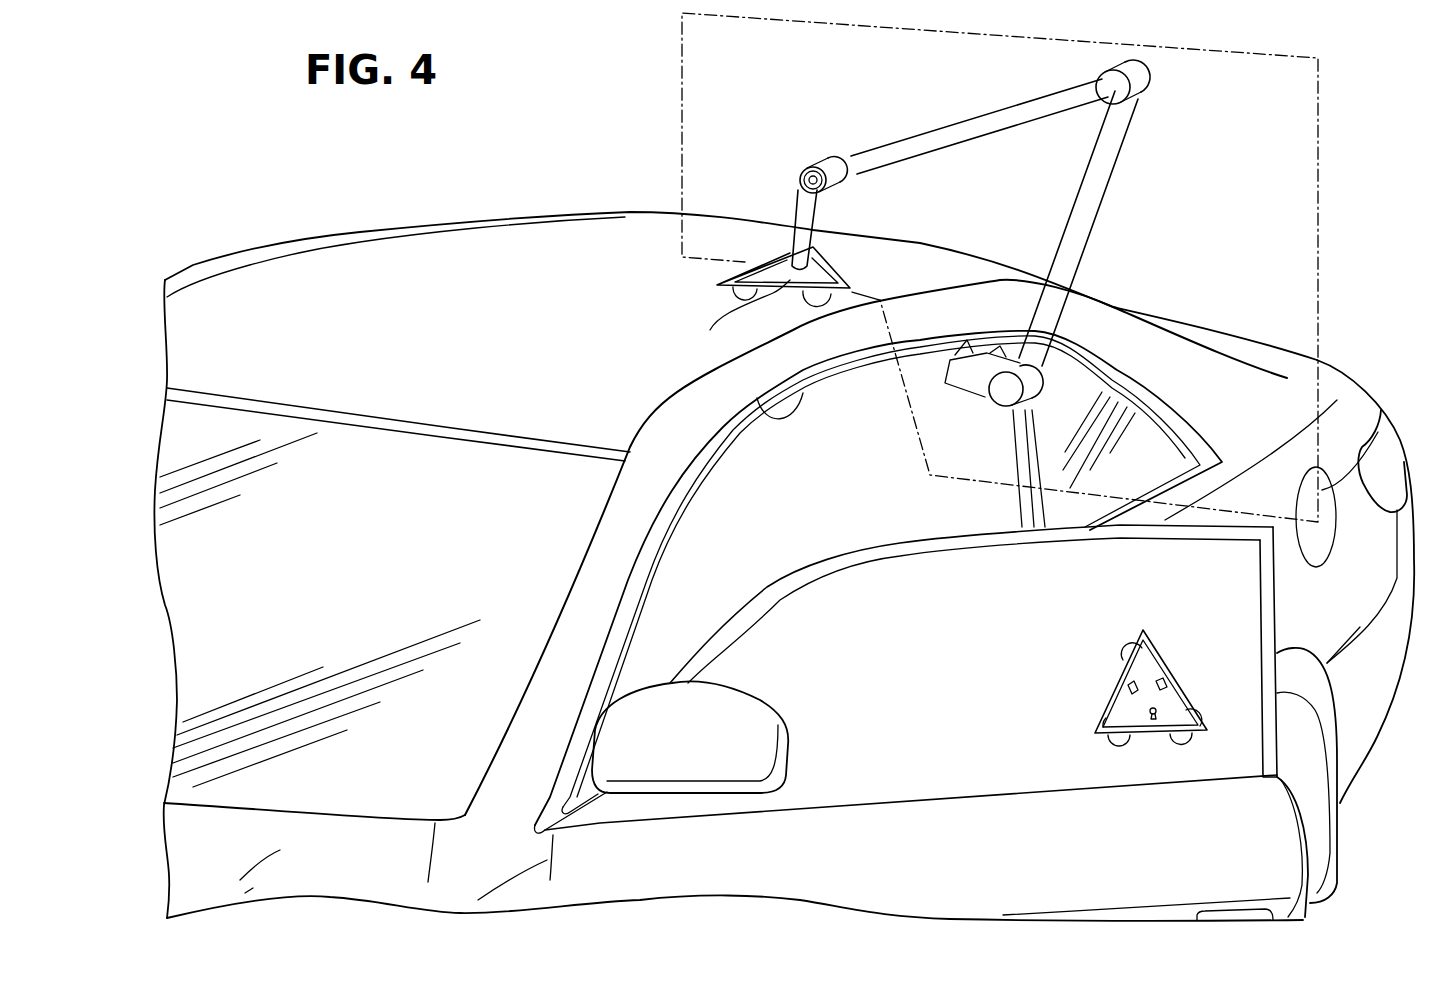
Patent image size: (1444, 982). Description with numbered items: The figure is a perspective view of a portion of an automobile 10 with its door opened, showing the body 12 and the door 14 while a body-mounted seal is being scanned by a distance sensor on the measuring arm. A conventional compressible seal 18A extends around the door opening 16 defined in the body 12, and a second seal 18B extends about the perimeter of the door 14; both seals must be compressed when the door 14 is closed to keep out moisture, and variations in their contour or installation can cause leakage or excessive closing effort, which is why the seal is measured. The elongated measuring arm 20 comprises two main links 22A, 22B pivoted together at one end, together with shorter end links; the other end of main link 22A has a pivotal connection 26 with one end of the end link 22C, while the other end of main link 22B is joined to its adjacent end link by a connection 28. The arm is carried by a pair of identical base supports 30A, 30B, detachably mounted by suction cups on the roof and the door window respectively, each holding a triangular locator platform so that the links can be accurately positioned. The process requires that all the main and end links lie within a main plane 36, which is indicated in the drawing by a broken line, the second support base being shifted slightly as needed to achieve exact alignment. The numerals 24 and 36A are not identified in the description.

The automobile 10 is at (430, 193).
The body 12 is at (487, 248).
The door 14 is at (926, 693).
The door opening 16 is at (846, 483).
The compressible seal 18A is at (753, 420).
The second seal 18B is at (815, 563).
The measuring arm 20 is at (987, 108).
The main link 22A is at (913, 143).
The main link 22B is at (1092, 200).
The end link 22C is at (803, 207).
The arm joint 24 is at (1098, 69).
The pivotal connection 26 is at (815, 153).
The connection 28 is at (988, 408).
The base support 30A is at (832, 258).
The base support 30B is at (1150, 737).
The main plane 36 is at (1250, 50).
The cable 36A is at (737, 315).